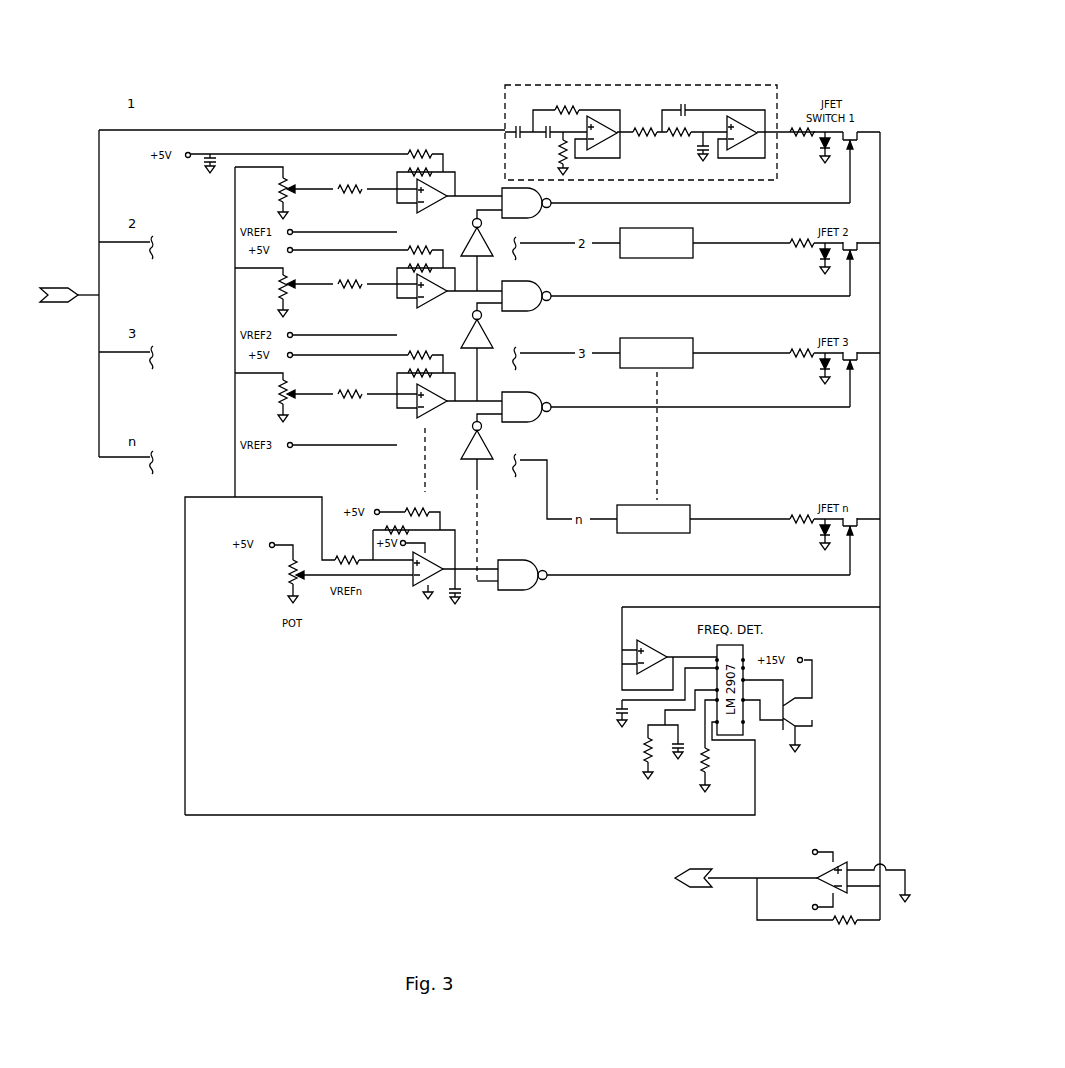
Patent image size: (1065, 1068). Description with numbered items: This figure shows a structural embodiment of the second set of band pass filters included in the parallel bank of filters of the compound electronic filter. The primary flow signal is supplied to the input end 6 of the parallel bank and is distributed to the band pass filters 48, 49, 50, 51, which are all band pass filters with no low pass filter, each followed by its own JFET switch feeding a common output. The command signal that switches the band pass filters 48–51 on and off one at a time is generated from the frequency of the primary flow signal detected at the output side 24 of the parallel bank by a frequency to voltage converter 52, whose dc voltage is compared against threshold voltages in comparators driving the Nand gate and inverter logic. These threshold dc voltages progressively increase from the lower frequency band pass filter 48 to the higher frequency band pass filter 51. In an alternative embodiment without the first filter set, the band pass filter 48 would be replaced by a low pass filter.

The input end 6 is at (90, 300).
The band pass filter 48 is at (740, 85).
The band pass filter 49 is at (695, 250).
The band pass filter 50 is at (695, 360).
The band pass filter 51 is at (692, 527).
The frequency to voltage converter 52 is at (618, 680).
The output side 24 is at (727, 885).